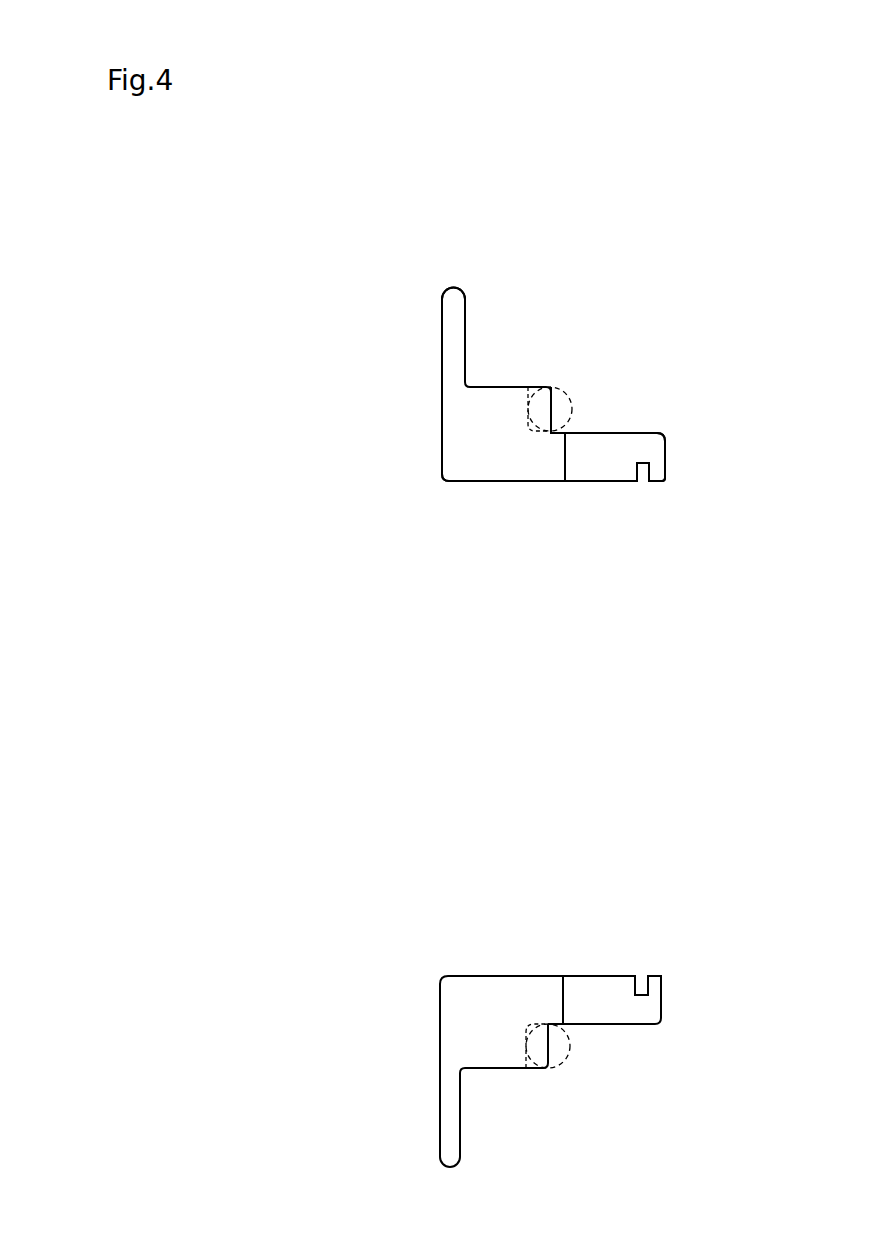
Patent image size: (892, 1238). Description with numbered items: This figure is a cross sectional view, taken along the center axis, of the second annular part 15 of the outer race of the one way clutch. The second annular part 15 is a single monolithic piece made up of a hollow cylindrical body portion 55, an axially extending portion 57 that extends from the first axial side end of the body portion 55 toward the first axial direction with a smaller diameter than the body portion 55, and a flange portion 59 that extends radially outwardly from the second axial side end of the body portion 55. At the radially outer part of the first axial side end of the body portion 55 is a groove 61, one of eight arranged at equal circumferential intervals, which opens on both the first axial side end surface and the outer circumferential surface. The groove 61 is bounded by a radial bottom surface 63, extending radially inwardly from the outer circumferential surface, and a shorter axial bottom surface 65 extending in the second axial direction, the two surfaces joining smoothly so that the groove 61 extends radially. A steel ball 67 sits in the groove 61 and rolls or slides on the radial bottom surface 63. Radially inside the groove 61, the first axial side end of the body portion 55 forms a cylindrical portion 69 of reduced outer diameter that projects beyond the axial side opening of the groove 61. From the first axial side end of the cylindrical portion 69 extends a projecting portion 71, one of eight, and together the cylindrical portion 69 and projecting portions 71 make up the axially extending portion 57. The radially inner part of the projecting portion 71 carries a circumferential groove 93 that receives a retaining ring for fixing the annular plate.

The second annular part 15 is at (567, 278).
The body portion 55 is at (485, 462).
The axially extending portion 57 is at (622, 412).
The flange portion 59 is at (456, 312).
The groove 61 is at (551, 405).
The radial bottom surface 63 is at (528, 407).
The axial bottom surface 65 is at (545, 434).
The ball 67 is at (563, 405).
The cylindrical portion 69 is at (552, 470).
The projecting portion 71 is at (620, 463).
The circumferential groove 93 is at (653, 467).